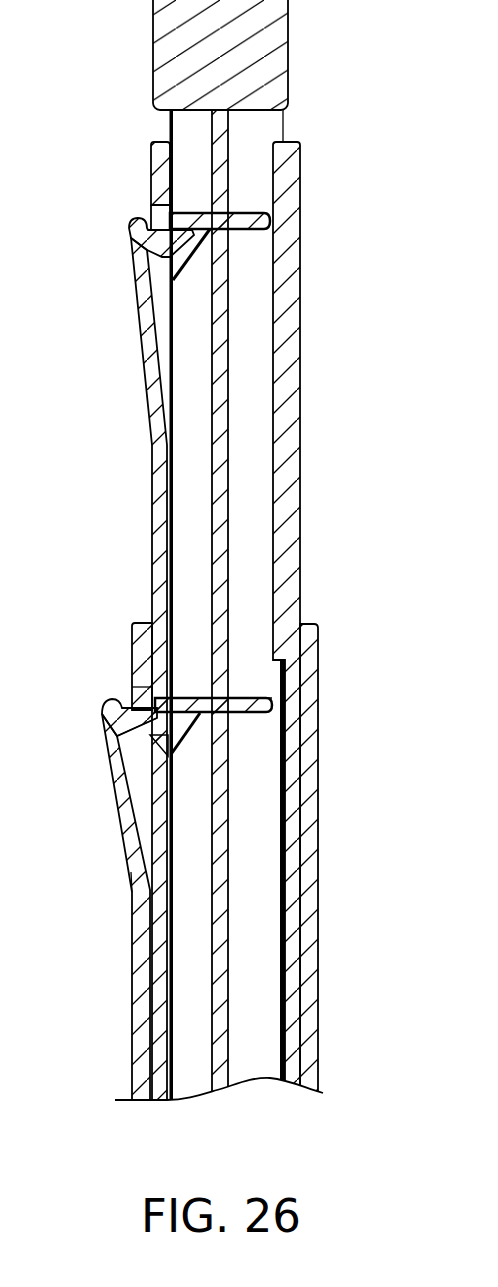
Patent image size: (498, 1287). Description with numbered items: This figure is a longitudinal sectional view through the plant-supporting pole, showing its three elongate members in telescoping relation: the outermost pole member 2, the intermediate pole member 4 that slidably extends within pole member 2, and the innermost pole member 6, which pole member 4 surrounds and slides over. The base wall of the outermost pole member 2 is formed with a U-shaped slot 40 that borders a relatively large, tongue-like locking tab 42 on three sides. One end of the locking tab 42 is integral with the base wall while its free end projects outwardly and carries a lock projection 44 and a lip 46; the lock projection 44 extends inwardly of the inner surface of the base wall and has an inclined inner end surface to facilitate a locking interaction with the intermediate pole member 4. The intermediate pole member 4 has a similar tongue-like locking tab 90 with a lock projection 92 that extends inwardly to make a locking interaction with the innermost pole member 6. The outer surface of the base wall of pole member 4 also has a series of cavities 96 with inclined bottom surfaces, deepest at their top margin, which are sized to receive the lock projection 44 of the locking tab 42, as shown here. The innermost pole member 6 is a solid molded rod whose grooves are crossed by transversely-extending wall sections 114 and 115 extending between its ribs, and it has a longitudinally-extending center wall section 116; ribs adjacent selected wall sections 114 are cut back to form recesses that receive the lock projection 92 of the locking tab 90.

The elongate pole member 2 is at (332, 922).
The intermediate pole member 4 is at (322, 372).
The innermost pole member 6 is at (130, 28).
The U-shaped slot 40 is at (133, 695).
The locking tab 42 is at (107, 792).
The lock projection 44 is at (130, 733).
The lip 46 is at (110, 702).
The locking tab 90 is at (140, 332).
The lock projection 92 is at (152, 255).
The cavities 96 is at (157, 743).
The transversely-extending wall sections 114 is at (190, 213).
The transversely-extending wall sections 115 is at (255, 693).
The center wall section 116 is at (229, 290).